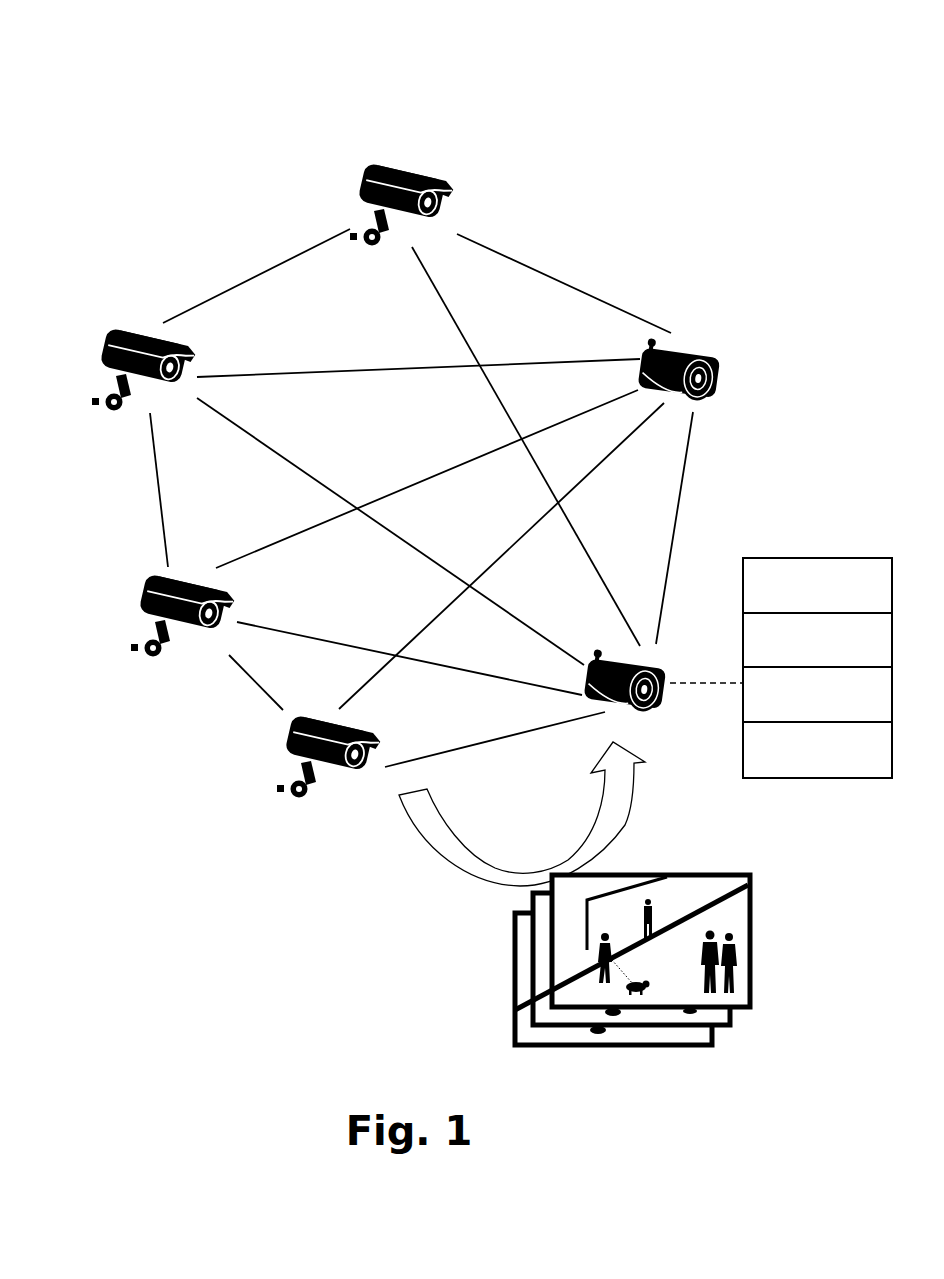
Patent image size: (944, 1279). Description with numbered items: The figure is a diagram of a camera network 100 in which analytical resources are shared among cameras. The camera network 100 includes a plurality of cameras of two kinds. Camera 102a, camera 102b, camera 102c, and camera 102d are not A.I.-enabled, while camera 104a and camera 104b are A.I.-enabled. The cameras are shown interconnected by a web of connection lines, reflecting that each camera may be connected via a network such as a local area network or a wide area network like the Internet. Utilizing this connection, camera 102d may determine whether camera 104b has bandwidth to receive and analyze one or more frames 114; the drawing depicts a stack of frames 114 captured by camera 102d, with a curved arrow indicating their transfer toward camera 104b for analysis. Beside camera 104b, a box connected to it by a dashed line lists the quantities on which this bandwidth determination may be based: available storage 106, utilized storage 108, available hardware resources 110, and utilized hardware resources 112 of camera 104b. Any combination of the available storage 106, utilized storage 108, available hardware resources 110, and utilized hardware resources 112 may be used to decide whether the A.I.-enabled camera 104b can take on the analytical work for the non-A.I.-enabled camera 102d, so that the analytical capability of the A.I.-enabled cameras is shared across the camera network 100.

The camera network 100 is at (413, 21).
The camera 102a is at (358, 180).
The camera 102b is at (113, 323).
The camera 102c is at (138, 587).
The camera 102d is at (288, 743).
The camera 104a is at (718, 353).
The camera 104b is at (670, 663).
The available storage 106 is at (817, 585).
The utilized storage 108 is at (817, 640).
The available hardware resources 110 is at (817, 694).
The utilized hardware resources 112 is at (817, 750).
The frames 114 is at (687, 873).